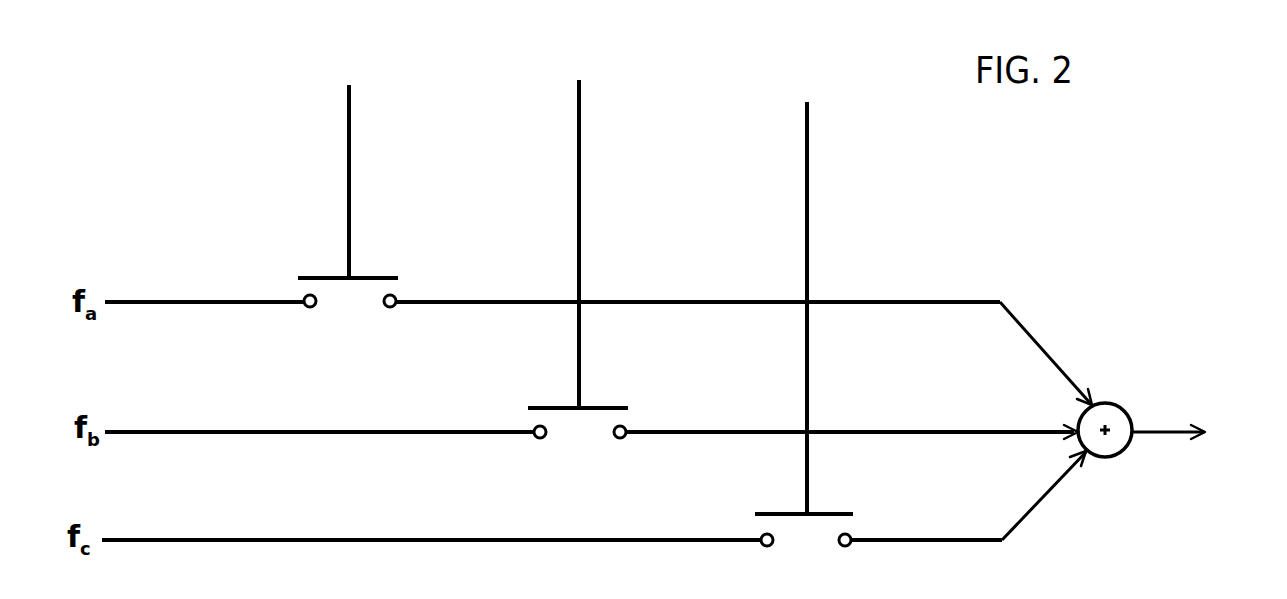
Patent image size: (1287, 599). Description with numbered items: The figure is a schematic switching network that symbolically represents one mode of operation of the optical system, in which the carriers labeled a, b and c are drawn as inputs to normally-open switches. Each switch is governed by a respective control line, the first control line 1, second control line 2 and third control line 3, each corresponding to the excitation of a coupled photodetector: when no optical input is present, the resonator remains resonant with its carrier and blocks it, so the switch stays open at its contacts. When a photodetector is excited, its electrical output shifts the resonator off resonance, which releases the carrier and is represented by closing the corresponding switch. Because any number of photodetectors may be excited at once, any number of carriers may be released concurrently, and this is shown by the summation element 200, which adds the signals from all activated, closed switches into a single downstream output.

The summation element 200 is at (1128, 402).
The switch control signal f1 1 is at (348, 159).
The switch control signal f2 2 is at (578, 221).
The switch control signal f3 3 is at (804, 287).